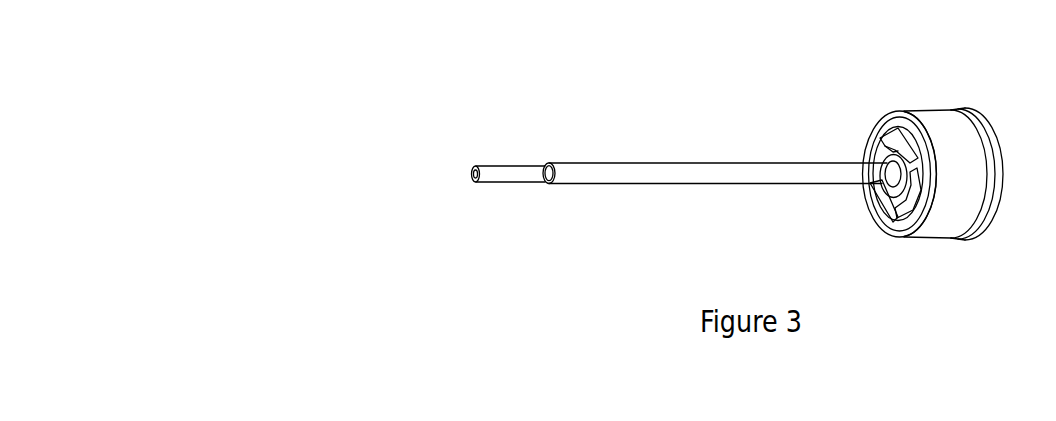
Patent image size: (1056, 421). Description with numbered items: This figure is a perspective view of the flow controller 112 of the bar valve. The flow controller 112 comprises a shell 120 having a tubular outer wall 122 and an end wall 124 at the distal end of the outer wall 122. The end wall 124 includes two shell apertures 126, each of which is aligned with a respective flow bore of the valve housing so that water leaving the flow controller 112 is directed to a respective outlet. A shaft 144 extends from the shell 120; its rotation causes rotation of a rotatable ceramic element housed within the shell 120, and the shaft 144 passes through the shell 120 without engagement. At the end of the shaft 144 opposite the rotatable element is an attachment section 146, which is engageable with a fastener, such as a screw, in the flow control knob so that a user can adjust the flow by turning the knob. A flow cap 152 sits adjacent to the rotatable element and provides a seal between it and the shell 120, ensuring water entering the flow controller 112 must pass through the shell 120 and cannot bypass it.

The flow controller 112 is at (540, 118).
The shell 120 is at (900, 233).
The tubular outer wall 122 is at (937, 230).
The end wall 124 is at (884, 223).
The shell apertures 126 is at (880, 198).
The shaft 144 is at (678, 183).
The attachment section 146 is at (512, 173).
The flow cap 152 is at (985, 110).